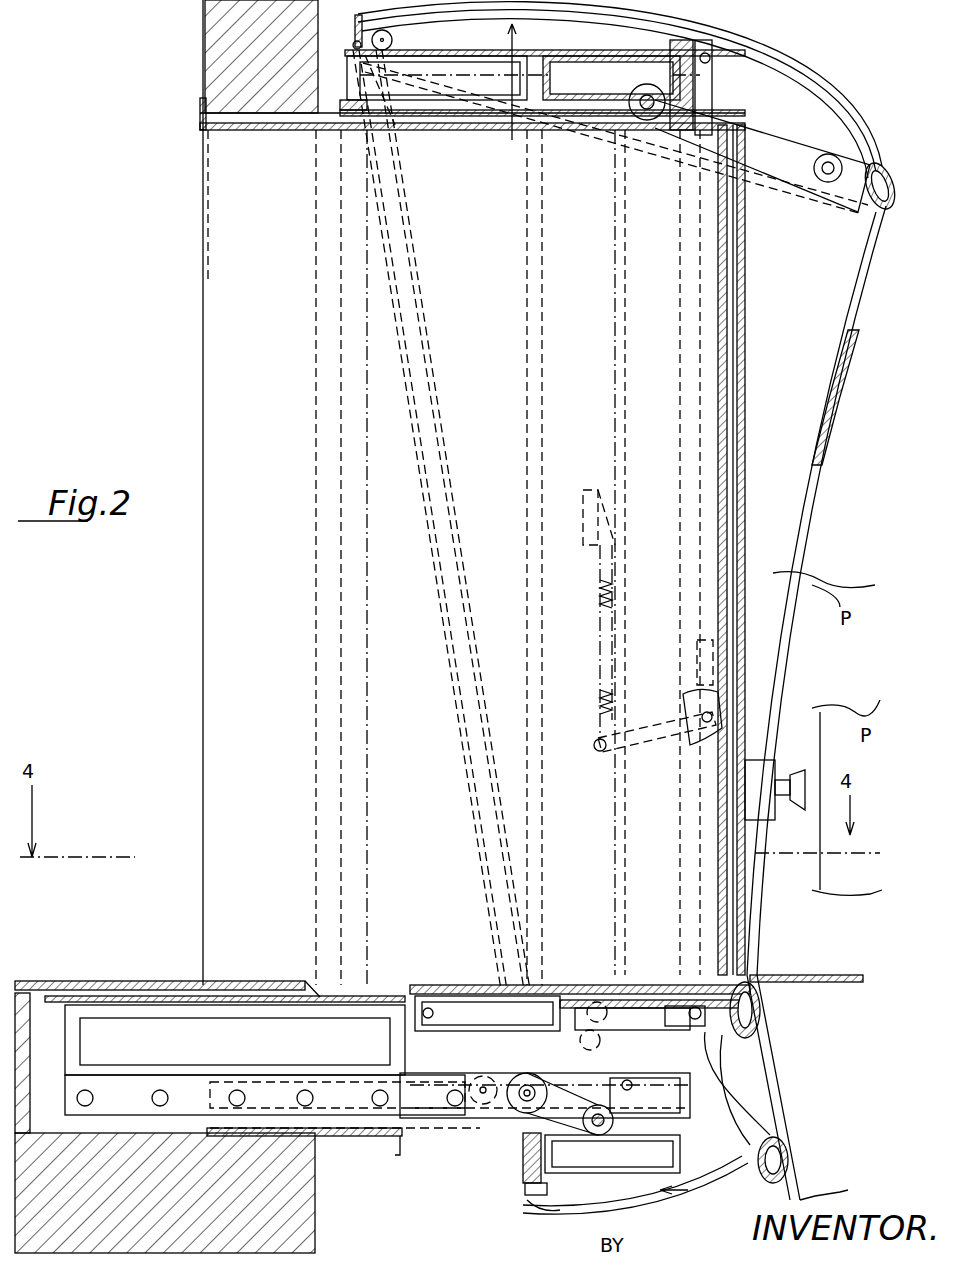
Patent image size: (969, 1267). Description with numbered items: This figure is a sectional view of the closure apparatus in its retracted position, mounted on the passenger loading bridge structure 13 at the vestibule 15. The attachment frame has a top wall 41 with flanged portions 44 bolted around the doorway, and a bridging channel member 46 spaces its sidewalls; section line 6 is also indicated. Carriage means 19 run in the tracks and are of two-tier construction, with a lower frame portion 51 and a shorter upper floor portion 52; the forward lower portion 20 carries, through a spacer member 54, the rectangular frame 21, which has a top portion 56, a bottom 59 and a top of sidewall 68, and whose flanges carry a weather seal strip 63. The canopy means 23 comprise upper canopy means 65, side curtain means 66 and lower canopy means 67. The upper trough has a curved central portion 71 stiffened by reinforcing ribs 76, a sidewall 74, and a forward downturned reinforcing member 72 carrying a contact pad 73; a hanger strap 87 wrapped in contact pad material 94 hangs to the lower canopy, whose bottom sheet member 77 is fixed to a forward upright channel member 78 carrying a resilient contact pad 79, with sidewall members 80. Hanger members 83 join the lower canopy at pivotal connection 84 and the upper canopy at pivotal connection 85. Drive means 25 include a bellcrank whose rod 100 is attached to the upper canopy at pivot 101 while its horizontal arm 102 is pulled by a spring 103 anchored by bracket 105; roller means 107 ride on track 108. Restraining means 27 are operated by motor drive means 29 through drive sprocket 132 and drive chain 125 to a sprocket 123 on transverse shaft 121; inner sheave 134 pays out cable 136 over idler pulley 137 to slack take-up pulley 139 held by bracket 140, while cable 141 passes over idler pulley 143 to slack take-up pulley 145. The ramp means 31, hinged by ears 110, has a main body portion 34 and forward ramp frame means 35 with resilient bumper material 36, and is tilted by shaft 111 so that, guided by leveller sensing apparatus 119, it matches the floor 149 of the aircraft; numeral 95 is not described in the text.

The passenger loading bridge structure 13 is at (206, 30).
The flanged portions 44 is at (203, 107).
The reinforcing ribs 76 is at (463, 18).
The upper canopy means 65 is at (505, 94).
The roller means 107 is at (393, 40).
The section line 6 is at (700, 24).
The curved central portion 71 is at (852, 61).
The sidewall 74 is at (798, 111).
The side curtain means 66 is at (786, 321).
The top of sidewall 68 is at (508, 99).
The top portion 56 is at (575, 60).
The rectangular frame 21 is at (568, 85).
The weather seal strip 63 is at (340, 105).
The track 108 is at (665, 48).
The pivot 101 is at (710, 56).
The pivotal connection 85 is at (402, 128).
The top wall 41 is at (472, 120).
The idler pulley 143 is at (642, 112).
The forward downturned reinforcing member 72 is at (850, 210).
The slack take-up pulley 145 is at (838, 160).
The ring 95 is at (884, 212).
The contact pad 73 is at (870, 240).
The canopy means 23 is at (803, 520).
The hanger strap 87 is at (816, 385).
The contact pad material 94 is at (806, 432).
The leveller sensing apparatus 119 is at (762, 765).
The vestibule 15 is at (156, 593).
The restraining means 27 is at (622, 352).
The rod 100 is at (698, 420).
The hanger members 83 is at (438, 545).
The bracket 105 is at (598, 488).
The spring 103 is at (598, 702).
The drive means 25 is at (655, 718).
The horizontal arm 102 is at (640, 752).
The cable 141 is at (612, 862).
The upper floor portion 52 is at (270, 1000).
The carriage means 19 is at (131, 1089).
The lower frame portion 51 is at (192, 1092).
The bridging channel member 46 is at (395, 1152).
The main body portion 34 is at (478, 988).
The ramp means 31 is at (455, 996).
The ears 110 is at (432, 1026).
The idler pulley 137 is at (594, 1000).
The slack take-up pulley 139 is at (660, 985).
The sprocket 123 is at (656, 1030).
The cable 136 is at (574, 1045).
The drive sprocket 132 is at (483, 1076).
The shaft 111 is at (633, 1081).
The drive chain 125 is at (516, 1110).
The transverse shaft 121 is at (560, 1135).
The motor drive means 29 is at (494, 1126).
The pivotal connection 84 is at (528, 1160).
The bottom 59 is at (530, 1183).
The inner sheave 134 is at (612, 1155).
The sidewall members 80 is at (706, 1166).
The spacer member 54 is at (665, 1120).
The bottom sheet member 77 is at (650, 1214).
The lower canopy means 67 is at (591, 1232).
The resilient bumper material 36 is at (758, 985).
The floor 149 is at (815, 977).
The forward ramp frame means 35 is at (740, 1040).
The bracket 140 is at (735, 1060).
The forward lower portion 20 is at (740, 1080).
The resilient contact pad 79 is at (790, 1148).
The forward upright channel member 78 is at (758, 1178).